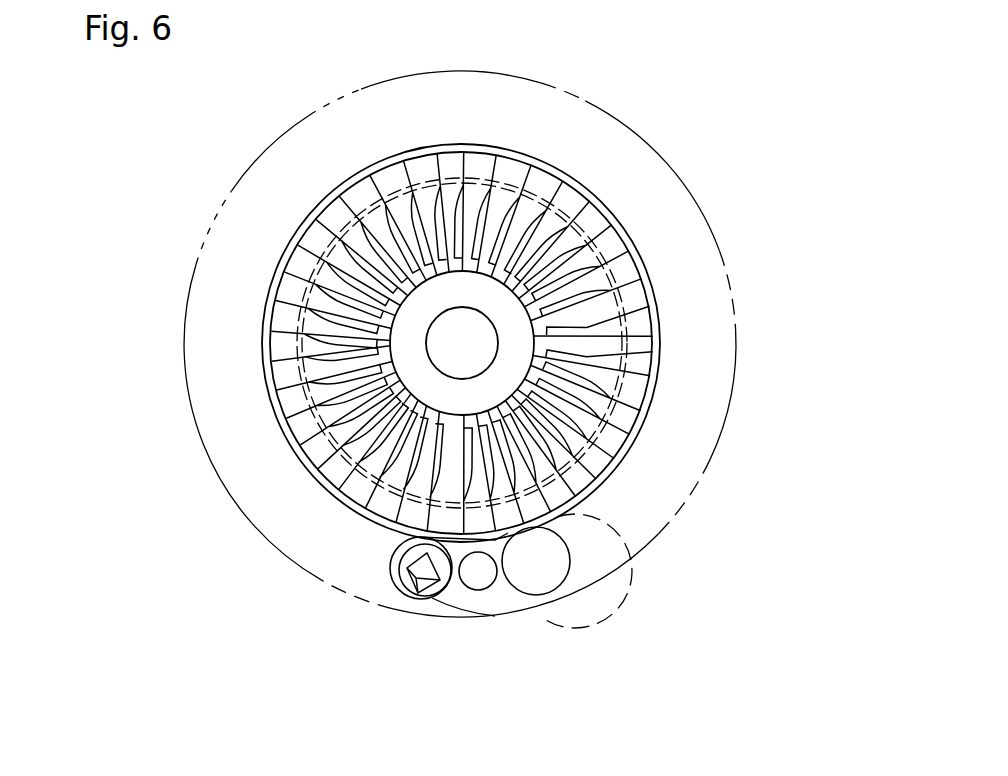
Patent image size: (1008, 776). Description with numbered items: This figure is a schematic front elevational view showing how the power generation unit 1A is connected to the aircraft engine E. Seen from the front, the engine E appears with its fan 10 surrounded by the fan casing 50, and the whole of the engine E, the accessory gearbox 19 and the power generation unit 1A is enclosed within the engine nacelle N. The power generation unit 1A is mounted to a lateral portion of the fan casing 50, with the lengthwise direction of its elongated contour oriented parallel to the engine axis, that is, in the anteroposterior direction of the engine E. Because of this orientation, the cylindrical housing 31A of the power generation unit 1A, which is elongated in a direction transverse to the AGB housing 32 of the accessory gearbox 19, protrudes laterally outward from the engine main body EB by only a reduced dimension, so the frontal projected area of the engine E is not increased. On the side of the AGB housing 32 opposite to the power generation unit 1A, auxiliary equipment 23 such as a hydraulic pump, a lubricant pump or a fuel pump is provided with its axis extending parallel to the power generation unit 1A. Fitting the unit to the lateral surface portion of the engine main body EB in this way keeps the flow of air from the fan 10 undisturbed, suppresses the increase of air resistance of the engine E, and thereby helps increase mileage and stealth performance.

The engine nacelle N is at (712, 463).
The aircraft engine E is at (721, 222).
The engine main body EB is at (694, 177).
The fan 10 is at (656, 294).
The fan casing 50 is at (657, 380).
The accessory gearbox 19 is at (500, 606).
The AGB housing 32 is at (388, 567).
The auxiliary equipment 23 is at (418, 588).
The housing of the power generation unit 31A is at (569, 548).
The power generation unit 1A is at (548, 563).